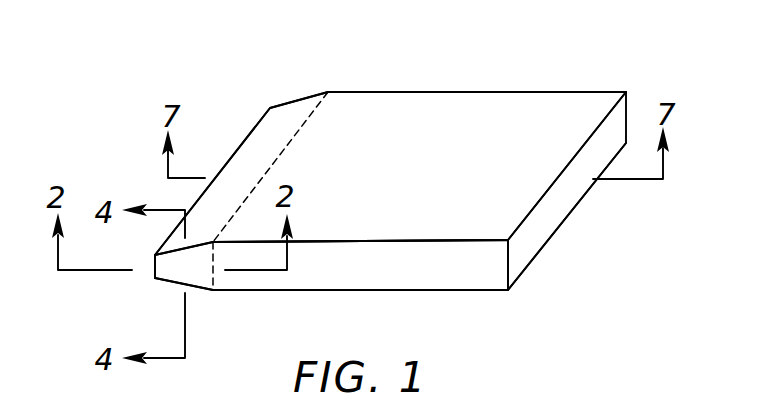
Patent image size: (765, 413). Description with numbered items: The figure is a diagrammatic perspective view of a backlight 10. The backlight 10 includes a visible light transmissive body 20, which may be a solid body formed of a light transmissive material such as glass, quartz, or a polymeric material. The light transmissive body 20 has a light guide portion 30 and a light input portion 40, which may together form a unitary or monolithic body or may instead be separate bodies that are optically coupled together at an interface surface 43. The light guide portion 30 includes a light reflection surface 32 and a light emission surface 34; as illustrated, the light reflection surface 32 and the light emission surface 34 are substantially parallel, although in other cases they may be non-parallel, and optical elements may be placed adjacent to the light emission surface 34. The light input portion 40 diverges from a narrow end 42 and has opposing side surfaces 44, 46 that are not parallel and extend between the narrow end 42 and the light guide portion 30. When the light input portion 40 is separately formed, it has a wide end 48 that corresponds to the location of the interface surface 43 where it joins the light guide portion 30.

The backlight 10 is at (285, 46).
The visible light transmissive body 20 is at (387, 92).
The light guide portion 30 is at (407, 229).
The light reflection surface 32 is at (488, 292).
The light emission surface 34 is at (459, 207).
The light input portion 40 is at (267, 127).
The narrow end 42 is at (152, 268).
The interface surface 43 is at (213, 284).
The side surface 44 is at (177, 283).
The side surface 46 is at (212, 243).
The wide end 48 is at (302, 130).